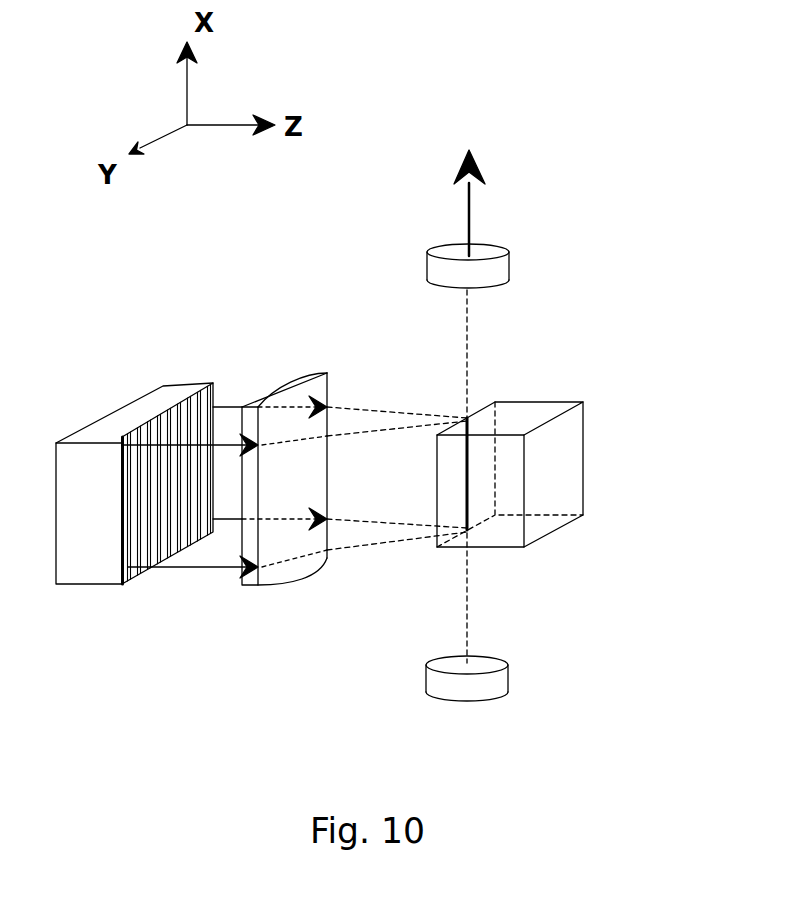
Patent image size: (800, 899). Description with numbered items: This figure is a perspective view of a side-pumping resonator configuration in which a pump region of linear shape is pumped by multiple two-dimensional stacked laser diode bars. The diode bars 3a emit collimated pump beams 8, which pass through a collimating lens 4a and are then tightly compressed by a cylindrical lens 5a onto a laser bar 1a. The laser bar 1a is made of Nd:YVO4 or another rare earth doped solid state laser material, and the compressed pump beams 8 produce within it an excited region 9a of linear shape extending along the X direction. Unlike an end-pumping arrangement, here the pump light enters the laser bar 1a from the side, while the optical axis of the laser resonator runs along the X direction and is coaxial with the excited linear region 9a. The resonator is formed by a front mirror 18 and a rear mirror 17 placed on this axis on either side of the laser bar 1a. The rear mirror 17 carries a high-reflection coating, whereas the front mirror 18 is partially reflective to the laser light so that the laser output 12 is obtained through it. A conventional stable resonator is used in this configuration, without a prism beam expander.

The laser bar 1a is at (570, 470).
The diode bars 3a is at (96, 565).
The collimating lens 4a is at (168, 442).
The cylindrical lens 5a is at (292, 578).
The collimated pump beams 8 is at (211, 555).
The excited region 9a is at (467, 450).
The output 12 is at (498, 188).
The rear mirror 17 is at (498, 682).
The front mirror 18 is at (497, 271).